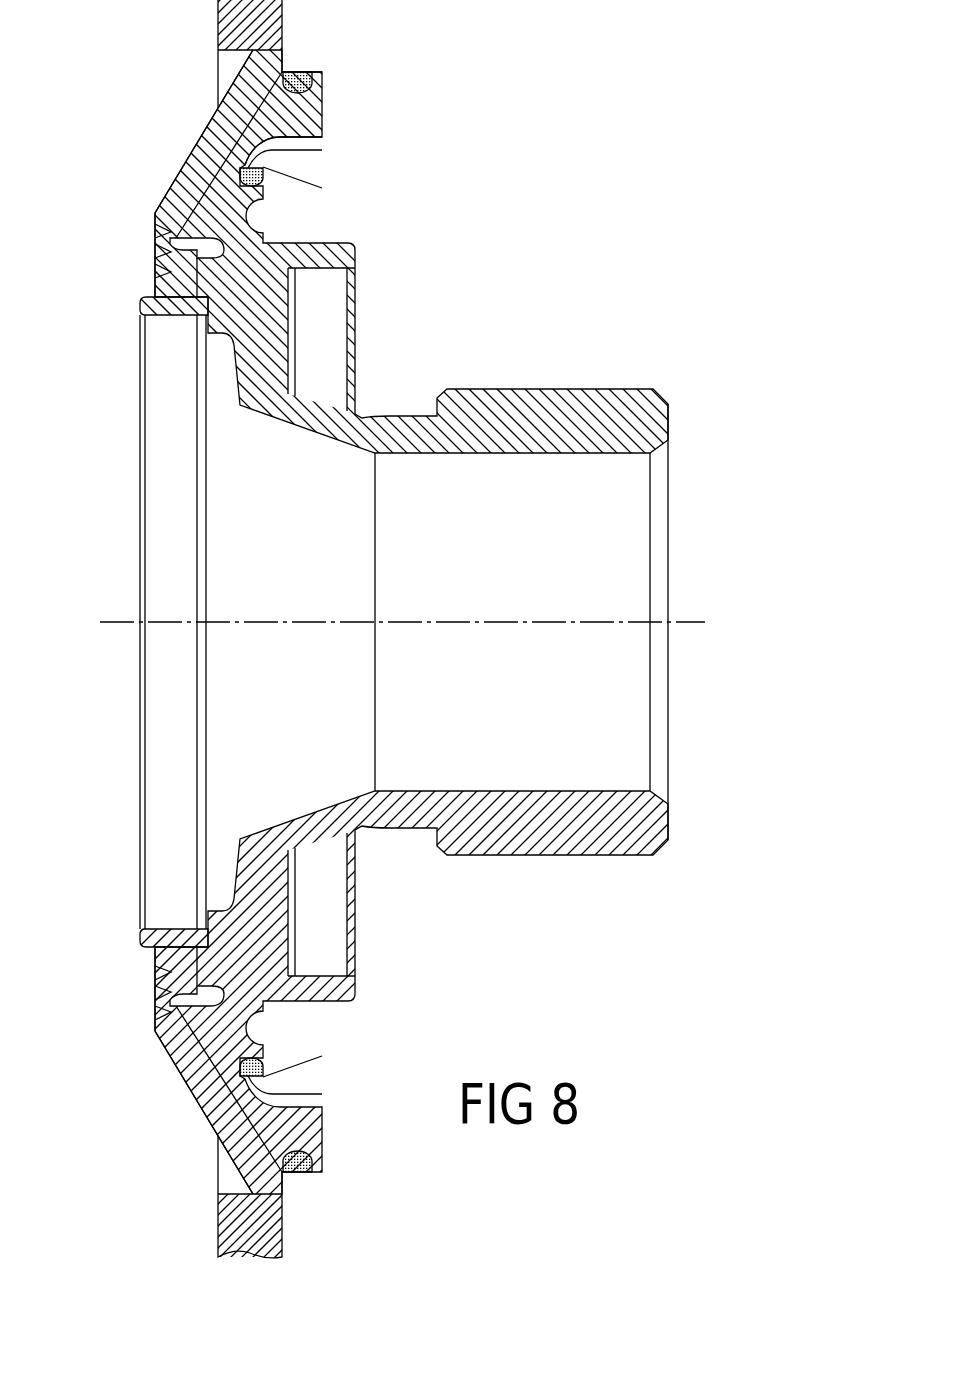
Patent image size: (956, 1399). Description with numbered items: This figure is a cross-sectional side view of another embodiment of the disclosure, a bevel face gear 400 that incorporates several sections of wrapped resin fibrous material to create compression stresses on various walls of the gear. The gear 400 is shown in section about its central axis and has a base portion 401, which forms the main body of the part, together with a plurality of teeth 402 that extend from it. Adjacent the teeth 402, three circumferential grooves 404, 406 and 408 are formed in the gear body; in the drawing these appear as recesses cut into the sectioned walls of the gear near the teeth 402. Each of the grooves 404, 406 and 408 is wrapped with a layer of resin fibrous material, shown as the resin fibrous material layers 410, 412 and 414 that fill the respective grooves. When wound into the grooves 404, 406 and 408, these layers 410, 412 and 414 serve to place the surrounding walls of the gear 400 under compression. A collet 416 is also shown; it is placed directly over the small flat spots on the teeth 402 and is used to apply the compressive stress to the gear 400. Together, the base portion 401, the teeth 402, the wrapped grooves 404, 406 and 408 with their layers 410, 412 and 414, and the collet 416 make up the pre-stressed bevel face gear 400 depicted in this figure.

The bevel face gear 400 is at (490, 271).
The base portion 401 is at (362, 428).
The teeth 402 is at (210, 131).
The circumferential groove 404 is at (198, 259).
The circumferential groove 406 is at (268, 165).
The circumferential groove 408 is at (308, 71).
The resin fibrous material layer 410 is at (170, 239).
The resin fibrous material layer 412 is at (322, 150).
The resin fibrous material layer 414 is at (293, 71).
The collet 416 is at (270, 1231).